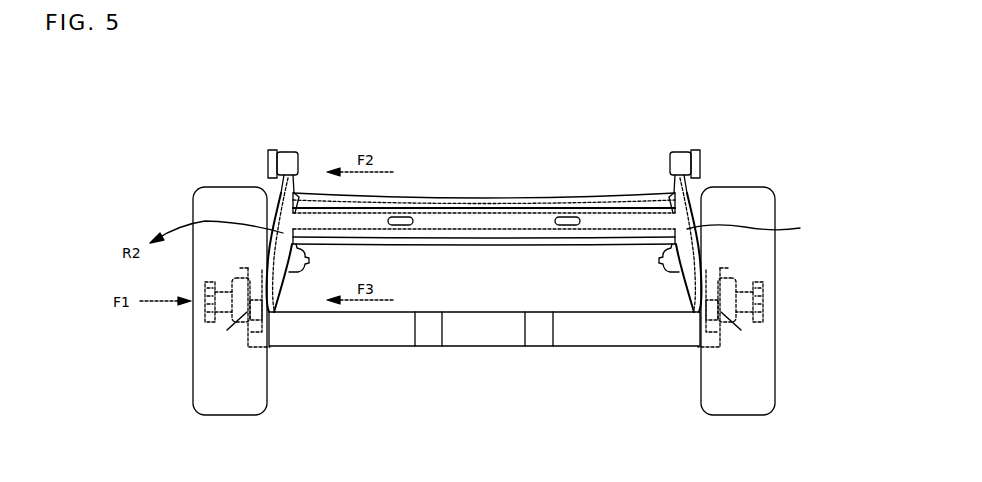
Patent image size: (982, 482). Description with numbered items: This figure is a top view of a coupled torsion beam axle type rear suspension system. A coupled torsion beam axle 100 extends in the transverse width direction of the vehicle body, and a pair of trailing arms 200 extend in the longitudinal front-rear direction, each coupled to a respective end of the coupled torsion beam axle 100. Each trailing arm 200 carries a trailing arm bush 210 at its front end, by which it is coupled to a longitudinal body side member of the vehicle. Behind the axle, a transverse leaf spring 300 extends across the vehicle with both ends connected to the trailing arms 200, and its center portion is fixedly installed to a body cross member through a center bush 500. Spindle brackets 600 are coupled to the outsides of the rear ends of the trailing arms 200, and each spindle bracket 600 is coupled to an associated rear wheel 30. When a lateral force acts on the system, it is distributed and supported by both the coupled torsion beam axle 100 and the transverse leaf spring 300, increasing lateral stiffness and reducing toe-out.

The rear wheel 30 is at (218, 383).
The coupled torsion beam axle 100 is at (487, 223).
The trailing arm 200 is at (283, 196).
The trailing arm bush 210 is at (288, 172).
The transverse leaf spring 300 is at (350, 330).
The center bush 500 is at (433, 335).
The spindle bracket 600 is at (215, 337).